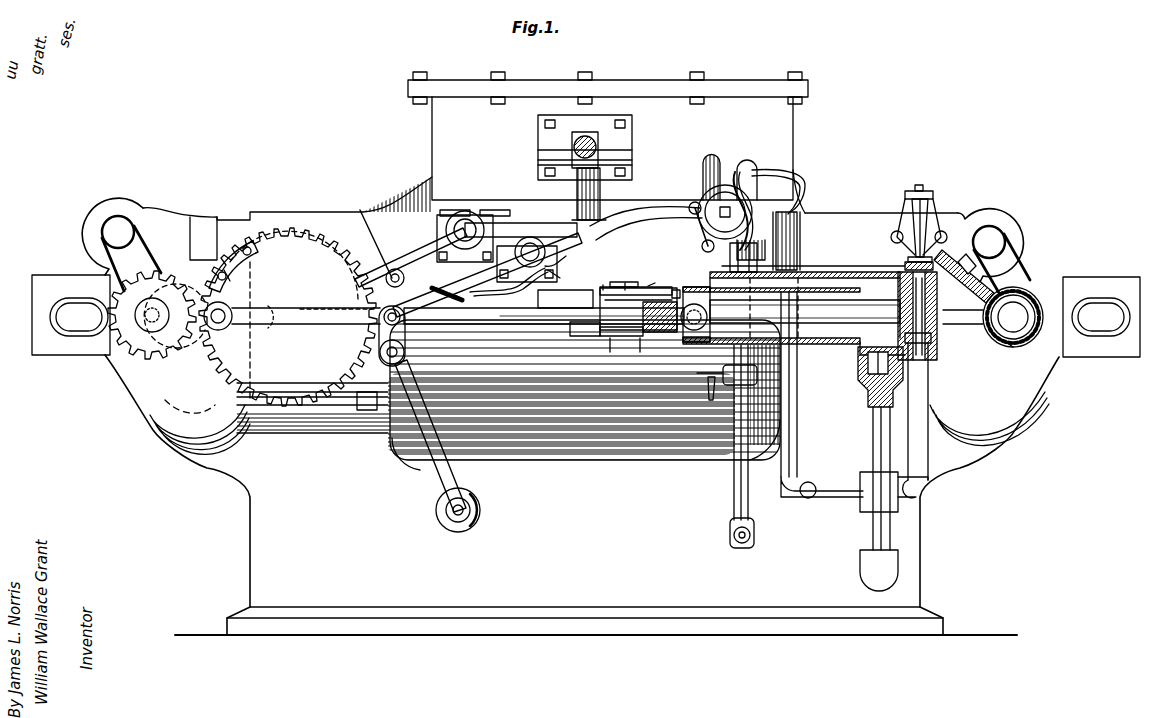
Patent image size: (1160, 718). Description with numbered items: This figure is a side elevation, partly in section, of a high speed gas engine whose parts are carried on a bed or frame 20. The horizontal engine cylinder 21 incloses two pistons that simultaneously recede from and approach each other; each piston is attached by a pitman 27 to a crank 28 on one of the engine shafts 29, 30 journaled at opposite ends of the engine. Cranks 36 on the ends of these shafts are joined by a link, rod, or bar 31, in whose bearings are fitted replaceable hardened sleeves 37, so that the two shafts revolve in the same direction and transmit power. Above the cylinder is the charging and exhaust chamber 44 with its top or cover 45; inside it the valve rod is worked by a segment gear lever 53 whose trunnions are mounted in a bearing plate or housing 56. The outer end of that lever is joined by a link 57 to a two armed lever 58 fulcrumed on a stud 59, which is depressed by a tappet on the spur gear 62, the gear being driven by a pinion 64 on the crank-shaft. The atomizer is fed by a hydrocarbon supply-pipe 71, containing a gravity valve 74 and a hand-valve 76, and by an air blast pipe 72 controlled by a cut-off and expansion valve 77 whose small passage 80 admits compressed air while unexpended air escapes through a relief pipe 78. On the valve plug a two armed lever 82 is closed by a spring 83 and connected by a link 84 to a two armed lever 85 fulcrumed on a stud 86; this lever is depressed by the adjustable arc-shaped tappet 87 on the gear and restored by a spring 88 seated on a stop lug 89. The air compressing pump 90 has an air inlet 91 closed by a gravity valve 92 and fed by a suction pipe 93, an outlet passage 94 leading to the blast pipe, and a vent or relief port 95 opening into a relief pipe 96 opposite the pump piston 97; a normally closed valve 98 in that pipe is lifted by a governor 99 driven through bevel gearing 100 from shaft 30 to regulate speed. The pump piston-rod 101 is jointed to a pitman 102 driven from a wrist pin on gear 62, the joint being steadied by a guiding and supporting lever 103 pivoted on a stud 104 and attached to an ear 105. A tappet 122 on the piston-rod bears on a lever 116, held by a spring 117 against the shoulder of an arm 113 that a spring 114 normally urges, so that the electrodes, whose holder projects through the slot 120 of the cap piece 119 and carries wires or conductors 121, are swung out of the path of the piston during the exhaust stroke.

The bed or frame 20 is at (582, 495).
The engine cylinder 21 is at (508, 395).
The pitman 27 is at (60, 283).
The crank 28 is at (590, 317).
The engine shaft 29 is at (152, 315).
The engine shaft 30 is at (993, 317).
The link, rod, or bar 31 is at (228, 228).
The crank 36 is at (553, 244).
The hardened sleeve 37 is at (130, 222).
The charging and exhaust chamber 44 is at (612, 156).
The top or cover 45 is at (470, 86).
The segment gear lever 53 is at (592, 140).
The bearing plate or housing 56 is at (632, 140).
The link 57 is at (600, 190).
The two armed lever 58 is at (395, 275).
The stud 59 is at (466, 218).
The spur gear 62 is at (260, 317).
The pinion 64 is at (152, 332).
The hydrocarbon supply-pipe 71 is at (750, 162).
The air blast pipe 72 is at (708, 160).
The gravity valve 74 is at (743, 257).
The hand-valve 76 is at (700, 374).
The cut-off and expansion valve 77 is at (698, 205).
The relief pipe 78 is at (800, 243).
The passage 80 is at (394, 252).
The two armed lever 82 is at (736, 170).
The spring 83 is at (798, 180).
The link 84 is at (697, 232).
The two armed lever 85 is at (646, 223).
The stud 86 is at (556, 274).
The arc-shaped cam projection or tappet 87 is at (258, 240).
The spring 88 is at (509, 289).
The stop lug 89 is at (578, 250).
The air compressing pump 90 is at (794, 313).
The air inlet 91 is at (816, 316).
The gravity valve 92 is at (855, 372).
The inlet or suction pipe 93 is at (870, 452).
The outlet passage 94 is at (845, 273).
The vent opening or relief port 95 is at (912, 312).
The relief pipe 96 is at (929, 380).
The pump piston 97 is at (708, 314).
The valve 98 is at (930, 320).
The governor 99 is at (933, 202).
The bevel gearing 100 is at (905, 265).
The piston-rod 101 is at (455, 335).
The pitman 102 is at (337, 316).
The guiding and supporting lever 103 is at (430, 472).
The stud 104 is at (438, 515).
The ear 105 is at (412, 325).
The arm 113 is at (640, 286).
The spring 114 is at (665, 284).
The lever 116 is at (630, 282).
The spring 117 is at (616, 288).
The cap piece 119 is at (594, 337).
The slot 120 is at (632, 310).
The wires or conductors 121 is at (648, 342).
The tappet 122 is at (565, 299).